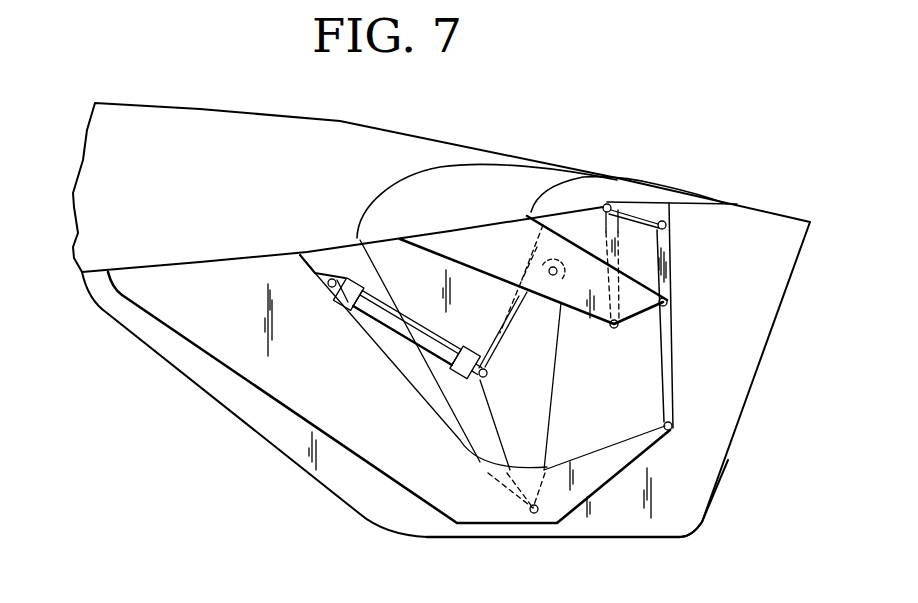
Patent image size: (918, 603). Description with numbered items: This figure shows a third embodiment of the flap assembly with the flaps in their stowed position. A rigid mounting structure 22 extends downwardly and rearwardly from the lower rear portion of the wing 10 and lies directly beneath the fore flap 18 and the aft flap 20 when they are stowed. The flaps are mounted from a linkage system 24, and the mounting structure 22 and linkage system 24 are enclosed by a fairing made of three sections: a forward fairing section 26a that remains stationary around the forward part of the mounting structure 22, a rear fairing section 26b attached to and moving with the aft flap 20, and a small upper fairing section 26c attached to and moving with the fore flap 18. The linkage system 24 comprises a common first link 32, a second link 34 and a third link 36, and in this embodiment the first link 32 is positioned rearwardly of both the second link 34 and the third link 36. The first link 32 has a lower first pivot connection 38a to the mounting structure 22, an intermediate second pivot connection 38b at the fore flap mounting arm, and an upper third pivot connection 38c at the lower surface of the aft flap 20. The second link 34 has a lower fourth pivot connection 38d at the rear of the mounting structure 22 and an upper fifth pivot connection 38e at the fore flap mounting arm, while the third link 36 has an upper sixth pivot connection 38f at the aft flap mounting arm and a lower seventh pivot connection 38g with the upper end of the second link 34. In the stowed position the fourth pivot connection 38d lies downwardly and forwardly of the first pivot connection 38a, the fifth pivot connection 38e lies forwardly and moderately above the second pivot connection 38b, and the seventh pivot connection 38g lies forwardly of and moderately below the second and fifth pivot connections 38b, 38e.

The wing 10 is at (276, 130).
The fore flap 18 is at (475, 180).
The aft flap 20 is at (650, 192).
The mounting structure 22 is at (340, 443).
The linkage system 24 is at (683, 322).
The forward fairing section 26a is at (482, 537).
The rear fairing section 26b is at (705, 524).
The upper fairing section 26c is at (508, 312).
The first link 32 is at (668, 360).
The second link 34 is at (544, 428).
The third link 36 is at (535, 248).
The first pivot connection 38a is at (669, 432).
The second pivot connection 38b is at (669, 300).
The third pivot connection 38c is at (667, 225).
The fourth pivot connection 38d is at (537, 513).
The fifth pivot connection 38e is at (548, 269).
The sixth pivot connection 38f is at (609, 203).
The seventh pivot connection 38g is at (615, 329).